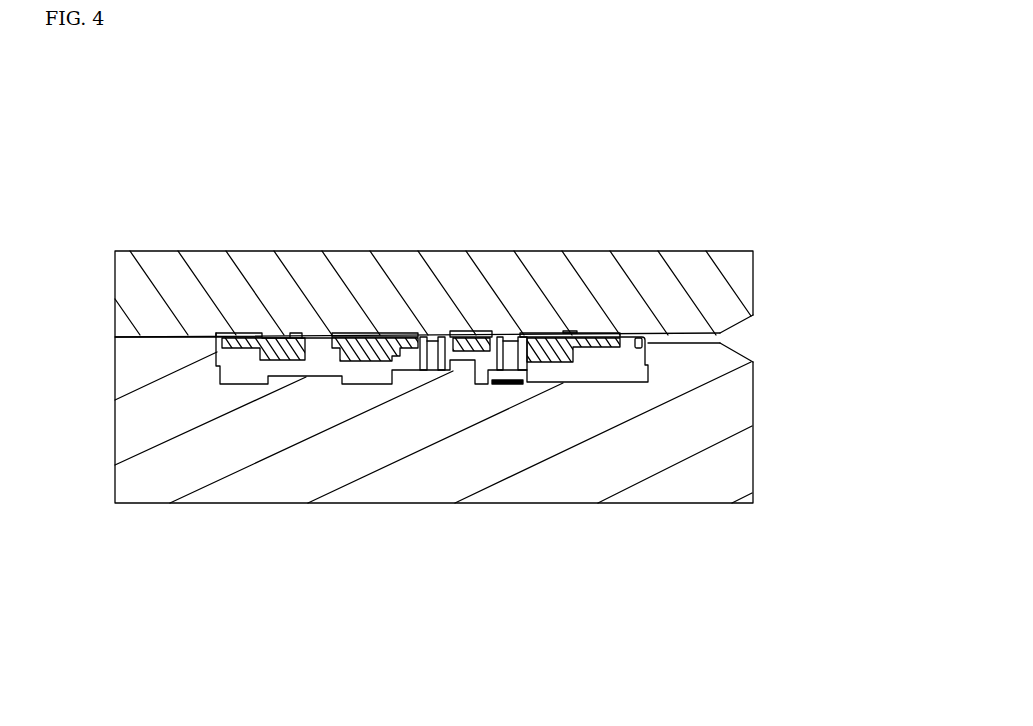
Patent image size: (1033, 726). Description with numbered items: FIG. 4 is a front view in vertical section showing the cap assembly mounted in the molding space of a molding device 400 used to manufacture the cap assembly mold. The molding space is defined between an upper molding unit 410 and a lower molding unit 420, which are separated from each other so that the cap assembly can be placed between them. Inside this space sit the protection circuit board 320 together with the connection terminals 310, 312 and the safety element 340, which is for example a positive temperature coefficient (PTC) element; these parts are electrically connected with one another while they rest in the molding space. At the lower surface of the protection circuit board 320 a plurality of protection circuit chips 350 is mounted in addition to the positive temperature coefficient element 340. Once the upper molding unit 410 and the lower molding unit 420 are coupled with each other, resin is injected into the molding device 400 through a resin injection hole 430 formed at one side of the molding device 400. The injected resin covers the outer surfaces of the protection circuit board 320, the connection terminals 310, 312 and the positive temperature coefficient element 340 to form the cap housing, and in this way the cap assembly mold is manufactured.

The molding device 400 is at (144, 166).
The upper molding unit 410 is at (390, 250).
The lower molding unit 420 is at (148, 505).
The resin injection hole 430 is at (740, 334).
The protection circuit board 320 is at (216, 339).
The protection circuit chips 350 is at (285, 360).
The connection terminal 310 is at (428, 370).
The connection terminal 312 is at (512, 384).
The safety element 340 is at (570, 364).